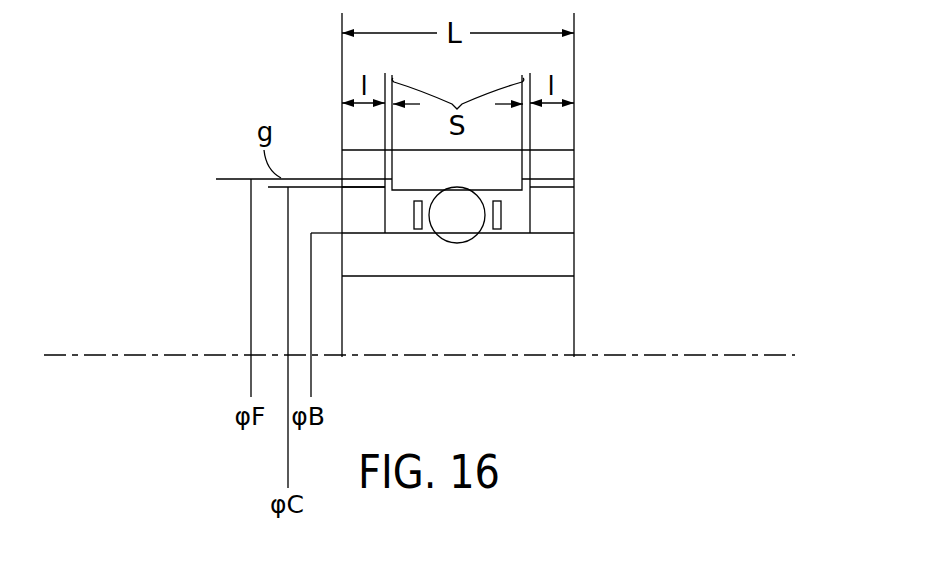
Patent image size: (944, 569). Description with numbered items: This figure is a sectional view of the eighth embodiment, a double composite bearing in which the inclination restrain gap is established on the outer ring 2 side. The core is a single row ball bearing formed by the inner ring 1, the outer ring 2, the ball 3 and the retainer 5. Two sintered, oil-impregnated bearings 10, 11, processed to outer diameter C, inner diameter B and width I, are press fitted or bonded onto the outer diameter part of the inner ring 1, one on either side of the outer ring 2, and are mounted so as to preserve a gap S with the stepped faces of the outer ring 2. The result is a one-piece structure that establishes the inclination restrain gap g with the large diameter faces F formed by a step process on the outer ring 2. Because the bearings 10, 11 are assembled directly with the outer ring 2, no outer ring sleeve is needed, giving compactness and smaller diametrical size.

The inner ring 1 is at (556, 262).
The outer ring 2 is at (562, 170).
The ball 3 is at (453, 237).
The retainer 5 is at (496, 223).
The sintered, oil-impregnated bearing 10 is at (356, 217).
The sintered, oil-impregnated bearing 11 is at (562, 212).